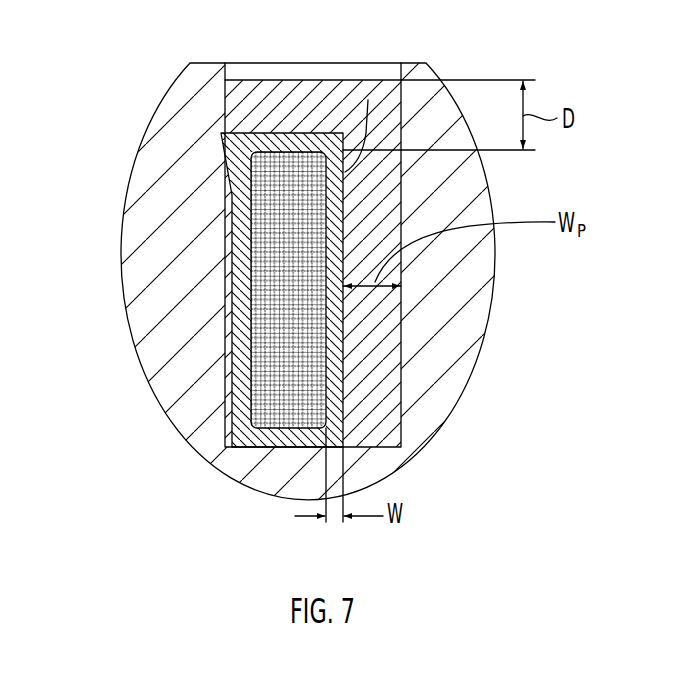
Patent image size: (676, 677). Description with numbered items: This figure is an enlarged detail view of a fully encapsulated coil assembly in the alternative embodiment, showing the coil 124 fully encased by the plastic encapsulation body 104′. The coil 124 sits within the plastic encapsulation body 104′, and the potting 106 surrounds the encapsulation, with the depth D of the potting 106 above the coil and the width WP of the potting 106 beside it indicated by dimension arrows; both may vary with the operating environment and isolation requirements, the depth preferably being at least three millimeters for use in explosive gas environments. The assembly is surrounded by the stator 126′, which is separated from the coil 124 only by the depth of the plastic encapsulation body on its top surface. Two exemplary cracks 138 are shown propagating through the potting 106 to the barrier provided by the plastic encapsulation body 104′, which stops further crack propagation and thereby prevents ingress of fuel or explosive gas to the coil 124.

The stator 126′ is at (143, 195).
The potting 106 is at (377, 373).
The plastic encapsulation body 104′ is at (270, 452).
The coil 124 is at (273, 242).
The cracks 138 is at (368, 97).